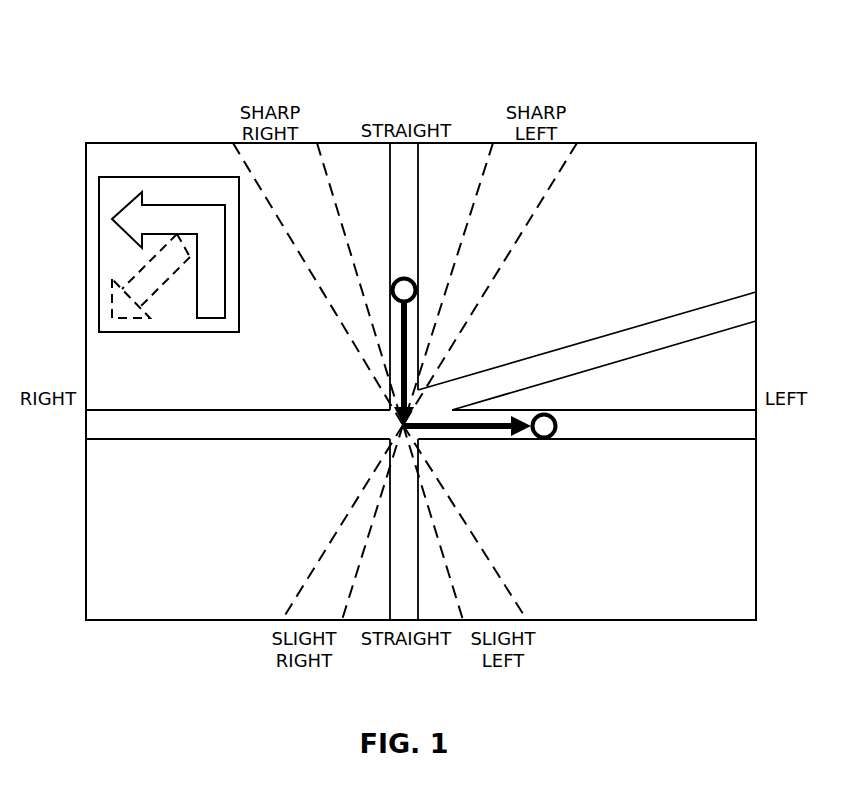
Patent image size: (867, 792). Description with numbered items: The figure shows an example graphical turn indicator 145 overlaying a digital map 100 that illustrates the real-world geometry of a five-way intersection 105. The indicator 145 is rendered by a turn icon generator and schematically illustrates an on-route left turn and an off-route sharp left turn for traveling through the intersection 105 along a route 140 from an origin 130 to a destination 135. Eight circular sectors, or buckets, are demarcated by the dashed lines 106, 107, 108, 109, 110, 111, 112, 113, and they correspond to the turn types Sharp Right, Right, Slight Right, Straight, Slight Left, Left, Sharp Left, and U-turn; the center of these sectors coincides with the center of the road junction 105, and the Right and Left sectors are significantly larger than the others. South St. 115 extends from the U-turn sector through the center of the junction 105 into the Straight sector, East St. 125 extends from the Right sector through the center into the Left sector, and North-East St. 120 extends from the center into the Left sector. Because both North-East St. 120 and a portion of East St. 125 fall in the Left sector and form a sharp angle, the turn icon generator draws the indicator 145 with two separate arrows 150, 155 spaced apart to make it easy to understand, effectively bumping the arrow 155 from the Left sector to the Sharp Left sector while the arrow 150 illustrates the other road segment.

The digital map 100 is at (495, 54).
The intersection 105 is at (668, 165).
The dashed line 106 is at (470, 220).
The dashed line 107 is at (493, 277).
The dashed line 108 is at (473, 533).
The dashed line 109 is at (457, 590).
The dashed line 110 is at (348, 590).
The dashed line 111 is at (333, 533).
The dashed line 112 is at (310, 277).
The dashed line 113 is at (340, 220).
The South St. 115 is at (400, 163).
The North-East St. 120 is at (715, 320).
The East St. 125 is at (715, 424).
The origin 130 is at (407, 277).
The destination 135 is at (558, 430).
The route 140 is at (403, 383).
The graphical turn indicator 145 is at (170, 193).
The arrow 150 is at (124, 219).
The arrow 155 is at (126, 304).